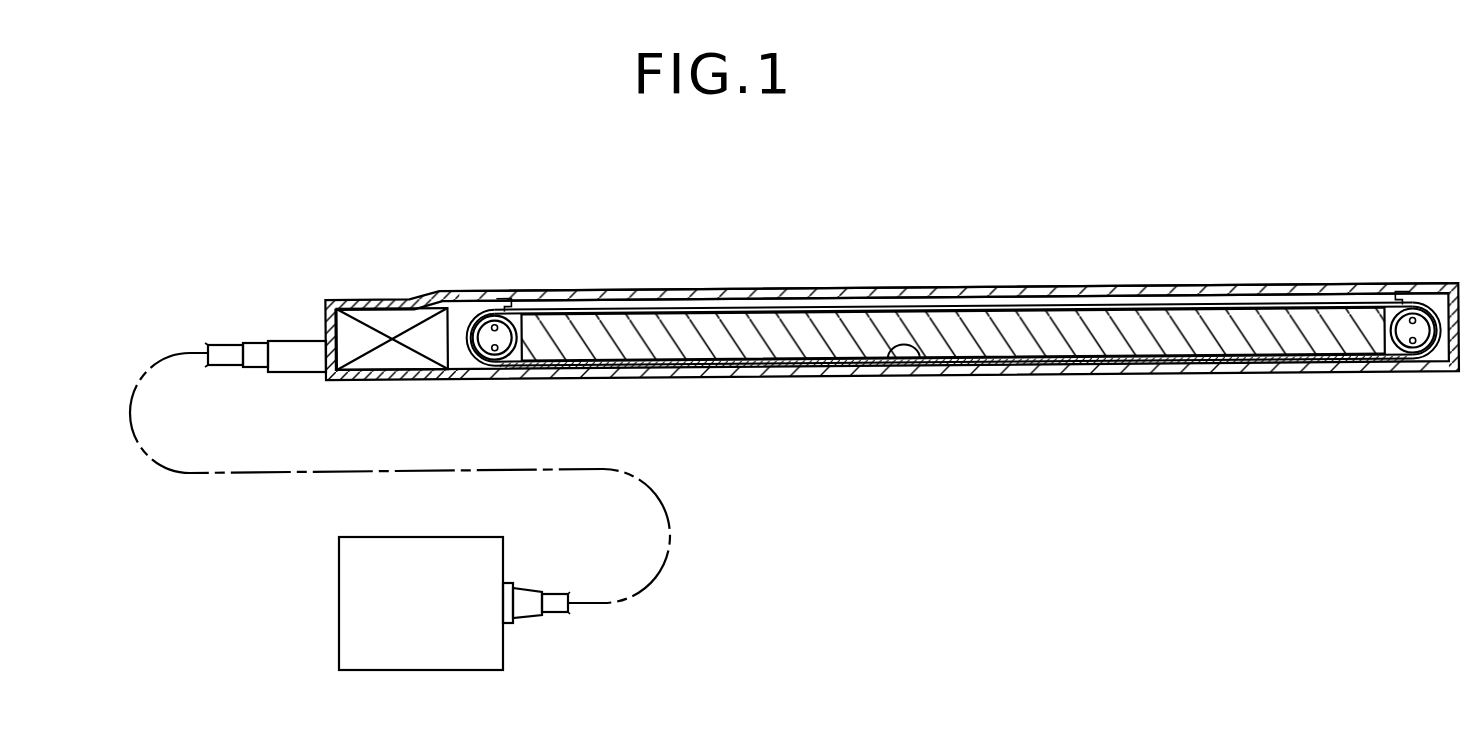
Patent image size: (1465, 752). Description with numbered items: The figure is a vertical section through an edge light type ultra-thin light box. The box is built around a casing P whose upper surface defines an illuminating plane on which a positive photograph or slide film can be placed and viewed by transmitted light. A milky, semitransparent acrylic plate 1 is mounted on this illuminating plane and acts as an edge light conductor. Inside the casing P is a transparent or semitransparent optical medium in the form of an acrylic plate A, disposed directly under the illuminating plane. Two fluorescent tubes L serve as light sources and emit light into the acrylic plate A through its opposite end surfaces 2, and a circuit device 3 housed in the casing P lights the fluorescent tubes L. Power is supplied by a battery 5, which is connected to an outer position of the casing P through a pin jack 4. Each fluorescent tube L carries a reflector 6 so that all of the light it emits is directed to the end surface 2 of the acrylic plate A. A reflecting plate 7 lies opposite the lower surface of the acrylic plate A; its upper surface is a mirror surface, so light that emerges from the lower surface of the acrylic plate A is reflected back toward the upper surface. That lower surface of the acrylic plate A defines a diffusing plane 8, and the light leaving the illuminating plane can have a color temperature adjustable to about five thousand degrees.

The acrylic plate 1 is at (983, 288).
The end surfaces 2 is at (518, 312).
The circuit device 3 is at (368, 312).
The pin jack 4 is at (287, 352).
The battery 5 is at (355, 628).
The reflector 6 is at (472, 357).
The reflecting plate 7 is at (888, 362).
The diffusing plane 8 is at (1027, 380).
The acrylic plate A is at (1075, 330).
The fluorescent tubes L is at (477, 302).
The casing P is at (1420, 287).